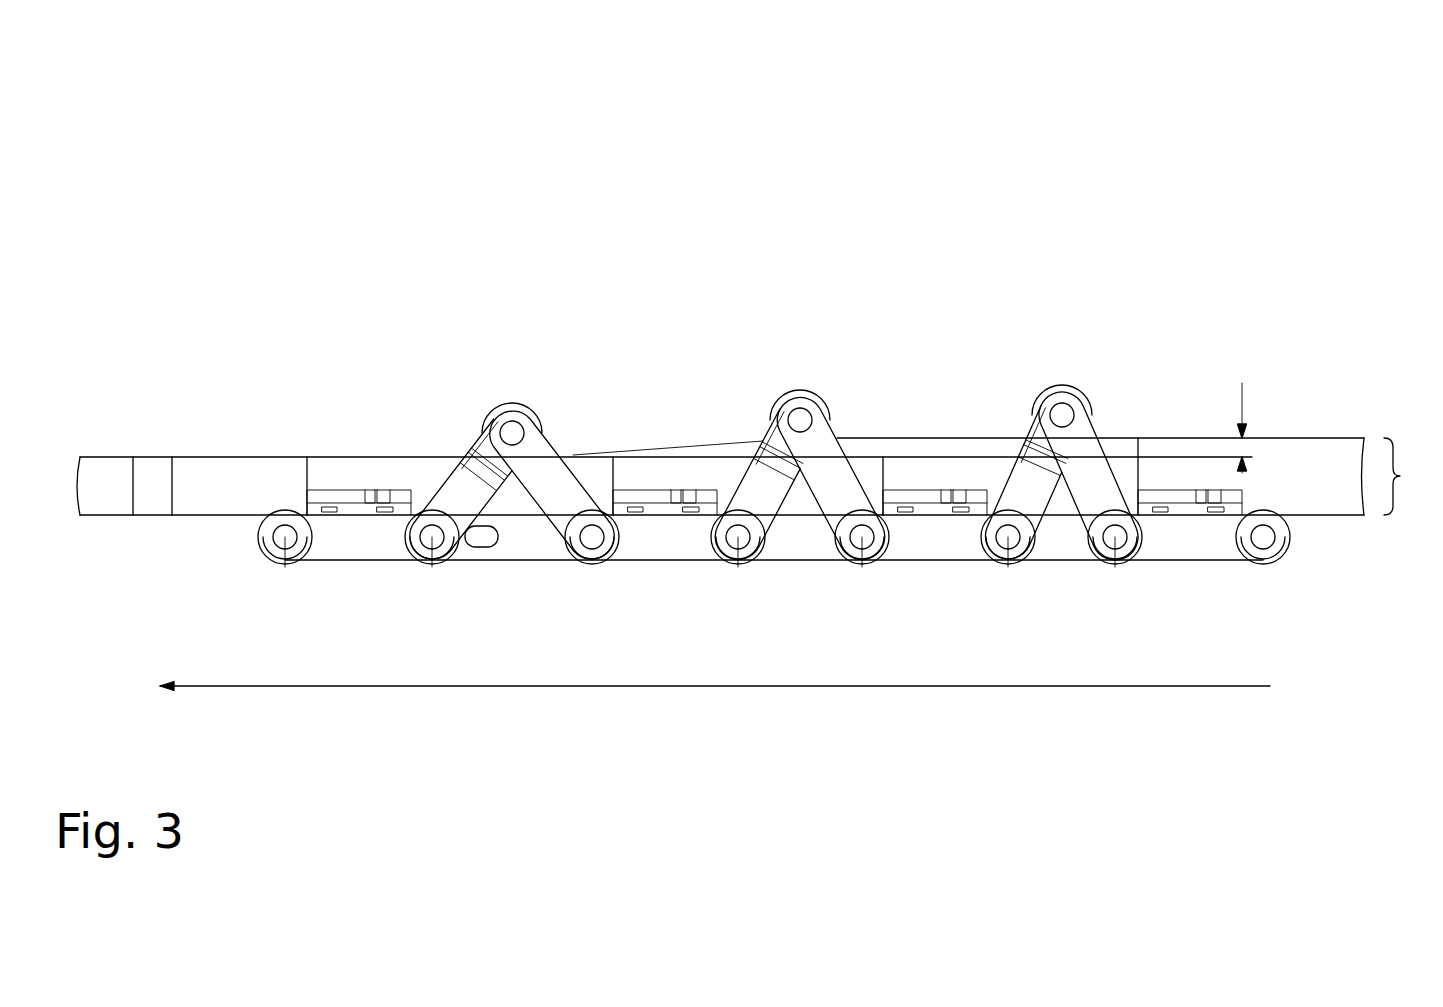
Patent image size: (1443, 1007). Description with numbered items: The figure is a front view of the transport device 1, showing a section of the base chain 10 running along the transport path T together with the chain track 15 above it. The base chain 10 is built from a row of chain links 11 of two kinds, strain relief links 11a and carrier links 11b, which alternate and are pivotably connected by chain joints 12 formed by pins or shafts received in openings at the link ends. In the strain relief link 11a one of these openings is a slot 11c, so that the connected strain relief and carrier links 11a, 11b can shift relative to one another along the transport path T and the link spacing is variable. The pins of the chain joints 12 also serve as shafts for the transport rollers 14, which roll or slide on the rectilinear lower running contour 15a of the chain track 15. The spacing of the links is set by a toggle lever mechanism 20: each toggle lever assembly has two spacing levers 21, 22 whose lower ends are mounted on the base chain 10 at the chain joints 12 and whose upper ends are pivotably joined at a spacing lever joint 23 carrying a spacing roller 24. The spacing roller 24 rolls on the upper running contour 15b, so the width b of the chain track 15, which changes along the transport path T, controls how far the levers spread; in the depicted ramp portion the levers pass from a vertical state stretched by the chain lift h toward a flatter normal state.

The transport device 1 is at (1205, 215).
The base chain 10 is at (1277, 577).
The chain link 11 is at (650, 547).
The strain relief link 11a is at (523, 535).
The carrier link 11b is at (360, 542).
The slot 11c is at (482, 540).
The chain joint 12 is at (1012, 542).
The transport roller 14 is at (870, 560).
The chain track 15 is at (352, 460).
The lower running contour 15a is at (210, 517).
The upper running contour 15b is at (218, 455).
The toggle lever mechanism 20 is at (758, 435).
The spacing lever 21 is at (1090, 448).
The spacing lever 22 is at (1042, 455).
The spacing lever joint 23 is at (510, 428).
The spacing roller 24 is at (820, 402).
The chain lift h is at (1241, 410).
The width of the chain track b is at (1404, 476).
The transport path T is at (715, 707).